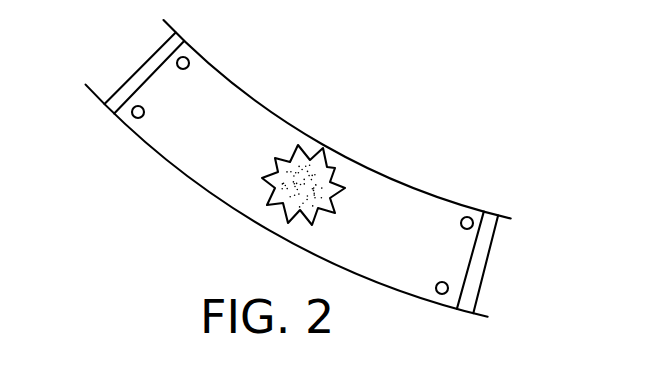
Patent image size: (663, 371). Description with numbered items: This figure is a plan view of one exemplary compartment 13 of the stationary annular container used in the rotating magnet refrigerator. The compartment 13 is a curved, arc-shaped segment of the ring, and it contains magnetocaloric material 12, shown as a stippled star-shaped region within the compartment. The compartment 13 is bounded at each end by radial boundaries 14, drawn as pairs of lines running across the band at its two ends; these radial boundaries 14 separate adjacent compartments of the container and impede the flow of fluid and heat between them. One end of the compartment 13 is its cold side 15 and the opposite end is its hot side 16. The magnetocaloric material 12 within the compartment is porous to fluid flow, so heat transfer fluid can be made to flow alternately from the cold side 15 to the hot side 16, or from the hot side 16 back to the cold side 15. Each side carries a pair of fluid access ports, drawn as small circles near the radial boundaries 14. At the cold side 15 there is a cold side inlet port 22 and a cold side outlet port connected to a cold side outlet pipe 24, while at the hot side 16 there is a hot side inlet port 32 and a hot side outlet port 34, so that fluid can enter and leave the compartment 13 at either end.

The magnetocaloric material 12 is at (340, 175).
The compartment 13 is at (208, 143).
The radial boundaries 14 is at (308, 160).
The cold side 15 is at (167, 92).
The hot side 16 is at (455, 257).
The cold side inlet port 22 is at (132, 115).
The cold side outlet pipe 24 is at (188, 60).
The hot side inlet port 32 is at (443, 297).
The hot side outlet port 34 is at (475, 220).